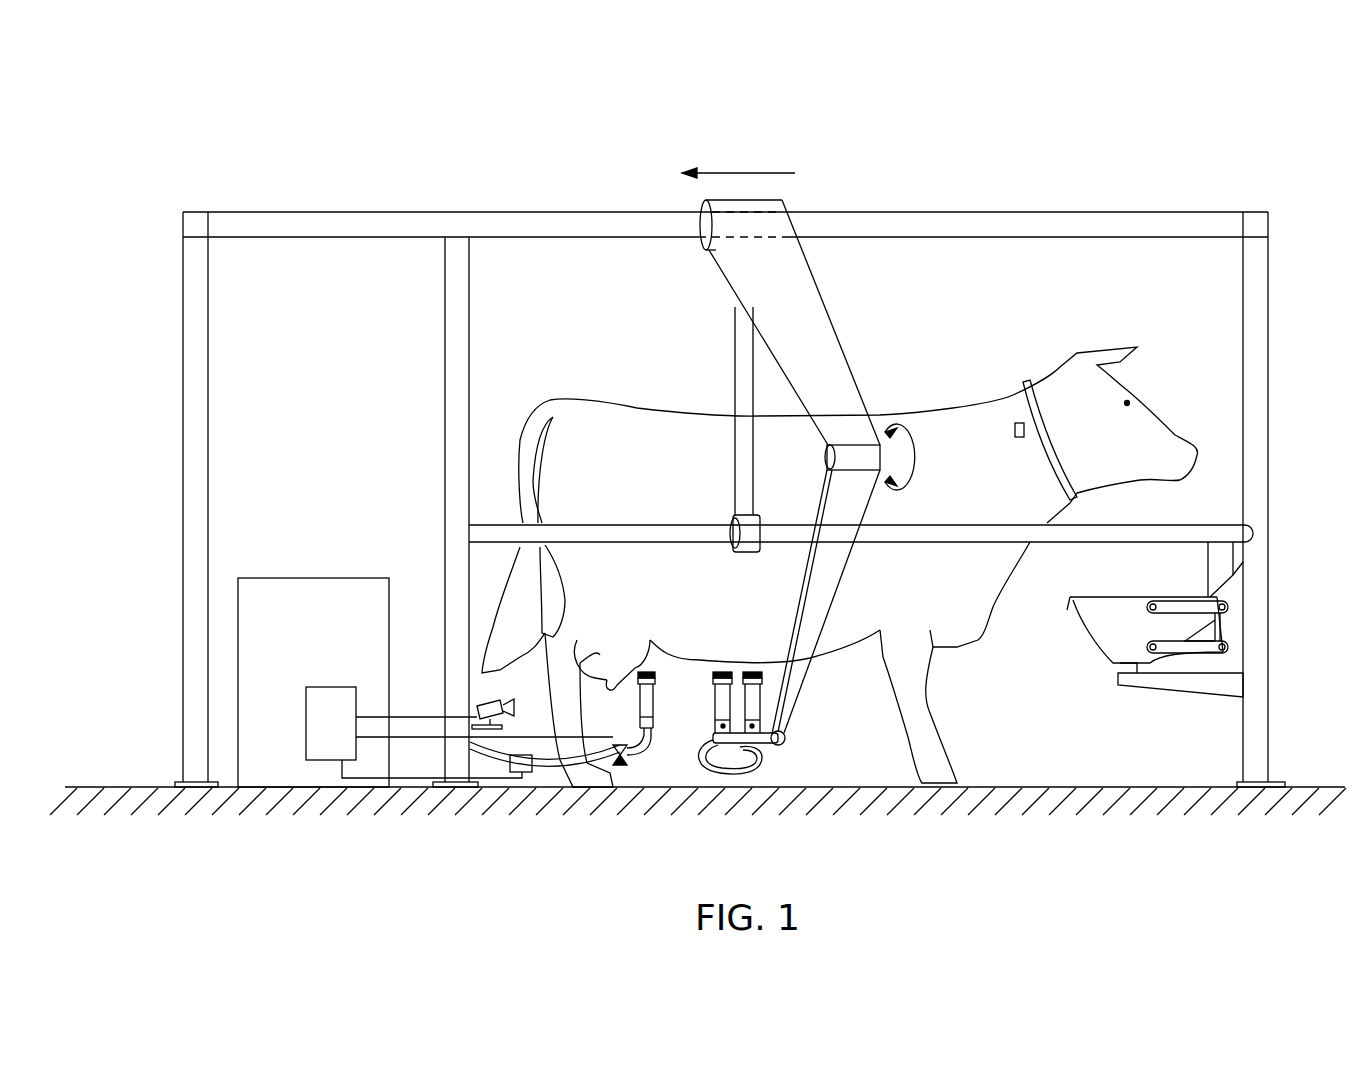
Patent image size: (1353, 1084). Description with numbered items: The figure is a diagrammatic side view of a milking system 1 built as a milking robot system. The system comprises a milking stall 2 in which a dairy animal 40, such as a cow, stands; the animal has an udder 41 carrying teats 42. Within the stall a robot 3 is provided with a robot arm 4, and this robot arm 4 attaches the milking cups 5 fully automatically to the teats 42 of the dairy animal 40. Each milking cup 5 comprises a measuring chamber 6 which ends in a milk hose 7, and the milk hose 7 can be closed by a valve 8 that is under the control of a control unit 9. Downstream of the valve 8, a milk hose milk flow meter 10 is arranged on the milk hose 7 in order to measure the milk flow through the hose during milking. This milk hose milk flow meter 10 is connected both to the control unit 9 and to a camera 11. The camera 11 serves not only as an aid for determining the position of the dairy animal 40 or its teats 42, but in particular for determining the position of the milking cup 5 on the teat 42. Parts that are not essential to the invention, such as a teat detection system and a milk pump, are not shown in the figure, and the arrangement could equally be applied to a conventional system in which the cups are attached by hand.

The milking system 1 is at (1267, 157).
The milking stall 2 is at (623, 208).
The robot 3 is at (309, 578).
The robot arm 4 is at (800, 662).
The milking cup 5 is at (670, 697).
The measuring chamber 6 is at (647, 724).
The milk hose 7 is at (647, 748).
The valve 8 is at (622, 765).
The control unit 9 is at (330, 687).
The milk hose milk flow meter 10 is at (522, 766).
The camera 11 is at (490, 712).
The dairy animal 40 is at (673, 478).
The udder 41 is at (630, 668).
The teats 42 is at (610, 685).